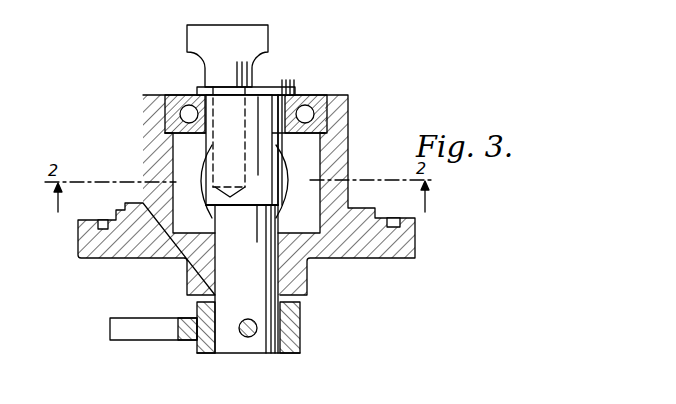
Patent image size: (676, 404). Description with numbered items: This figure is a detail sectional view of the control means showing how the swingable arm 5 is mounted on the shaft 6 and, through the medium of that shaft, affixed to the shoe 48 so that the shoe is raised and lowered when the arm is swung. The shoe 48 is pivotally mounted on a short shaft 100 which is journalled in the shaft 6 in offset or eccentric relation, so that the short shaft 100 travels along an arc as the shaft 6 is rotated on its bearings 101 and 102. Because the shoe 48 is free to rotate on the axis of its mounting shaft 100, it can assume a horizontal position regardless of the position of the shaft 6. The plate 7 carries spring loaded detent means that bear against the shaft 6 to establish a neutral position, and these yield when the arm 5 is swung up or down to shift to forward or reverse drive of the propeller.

The swingable arm 5 is at (142, 341).
The shaft 6 is at (248, 354).
The plate 7 is at (376, 259).
The shoe 48 is at (268, 42).
The short shaft 100 is at (248, 77).
The bearing 101 is at (313, 92).
The bearing 102 is at (281, 232).